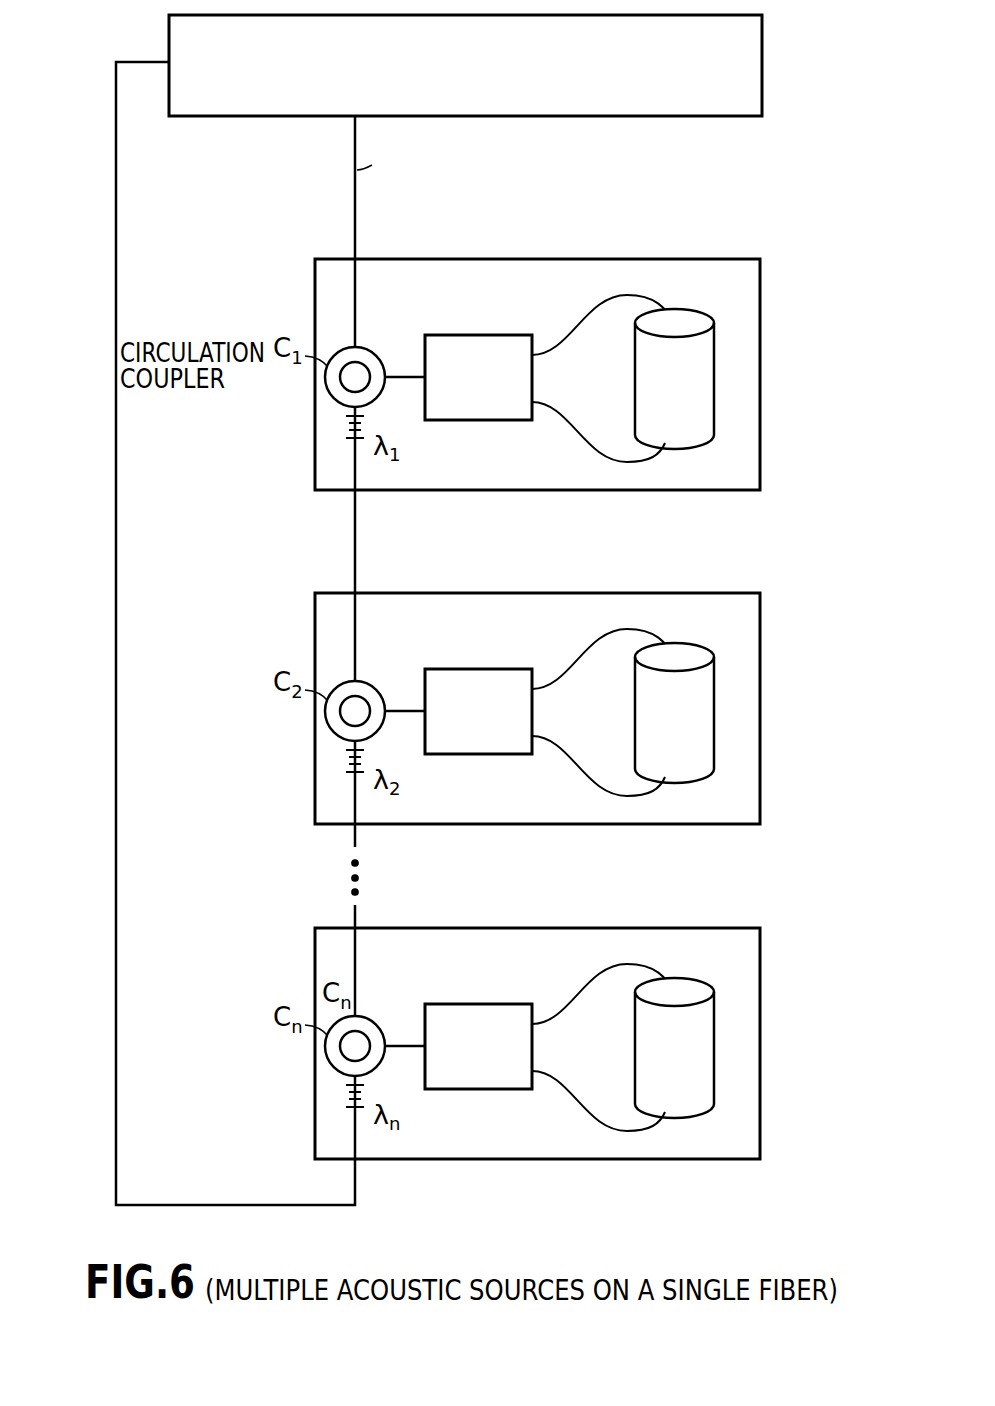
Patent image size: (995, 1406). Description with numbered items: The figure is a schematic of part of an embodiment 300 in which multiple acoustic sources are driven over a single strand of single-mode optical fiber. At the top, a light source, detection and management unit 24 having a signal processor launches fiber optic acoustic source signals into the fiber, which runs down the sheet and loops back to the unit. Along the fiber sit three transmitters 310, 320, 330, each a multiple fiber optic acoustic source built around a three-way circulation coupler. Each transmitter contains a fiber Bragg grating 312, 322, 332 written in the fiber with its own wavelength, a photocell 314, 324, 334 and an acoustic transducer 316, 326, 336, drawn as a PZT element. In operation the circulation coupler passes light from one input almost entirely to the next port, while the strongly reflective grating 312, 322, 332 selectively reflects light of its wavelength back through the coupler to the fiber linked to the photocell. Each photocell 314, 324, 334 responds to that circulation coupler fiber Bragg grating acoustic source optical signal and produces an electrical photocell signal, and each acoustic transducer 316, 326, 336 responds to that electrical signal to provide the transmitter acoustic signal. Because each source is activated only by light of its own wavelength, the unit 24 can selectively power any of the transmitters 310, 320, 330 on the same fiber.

The embodiment 300 is at (86, 25).
The detection and management unit 24 is at (708, 117).
The transmitter 310 is at (728, 488).
The fiber Bragg grating 312 is at (322, 433).
The photocell 314 is at (490, 334).
The acoustic transducer 316 is at (637, 417).
The transmitter 320 is at (559, 730).
The fiber Bragg grating 322 is at (335, 737).
The photocell 324 is at (478, 693).
The acoustic transducer 326 is at (623, 712).
The transmitter 330 is at (559, 1065).
The fiber Bragg grating 332 is at (335, 1072).
The photocell 334 is at (478, 1028).
The acoustic transducer 336 is at (623, 1047).